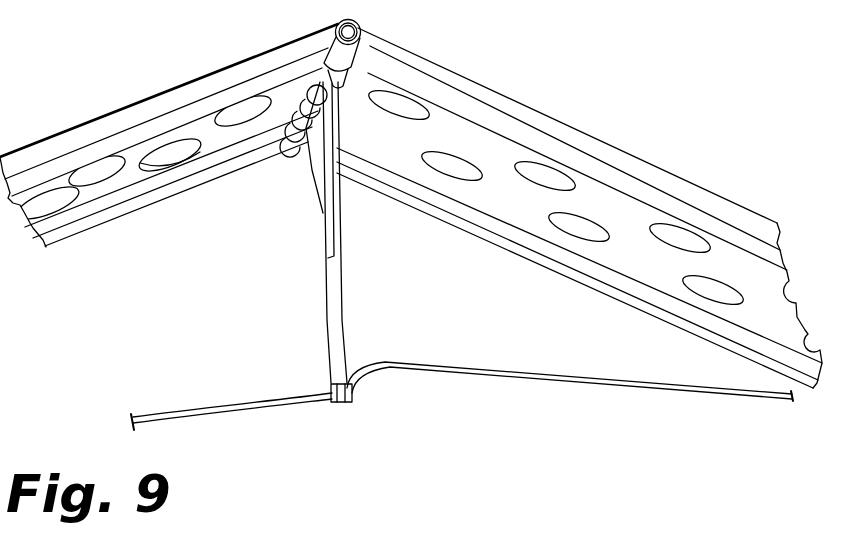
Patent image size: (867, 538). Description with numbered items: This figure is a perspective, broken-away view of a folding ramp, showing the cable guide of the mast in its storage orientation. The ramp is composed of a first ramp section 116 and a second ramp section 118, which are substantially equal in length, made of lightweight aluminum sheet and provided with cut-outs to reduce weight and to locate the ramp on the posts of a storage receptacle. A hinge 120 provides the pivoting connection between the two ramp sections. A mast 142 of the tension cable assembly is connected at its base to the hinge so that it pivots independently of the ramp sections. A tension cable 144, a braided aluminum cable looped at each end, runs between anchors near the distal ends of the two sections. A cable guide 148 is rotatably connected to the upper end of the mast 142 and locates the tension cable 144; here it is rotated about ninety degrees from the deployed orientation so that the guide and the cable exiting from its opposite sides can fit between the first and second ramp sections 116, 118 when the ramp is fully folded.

The first ramp section 116 is at (126, 186).
The second ramp section 118 is at (503, 197).
The hinge 120 is at (366, 62).
The mast 142 is at (327, 327).
The tension cable 144 is at (457, 362).
The cable guide 148 is at (347, 402).